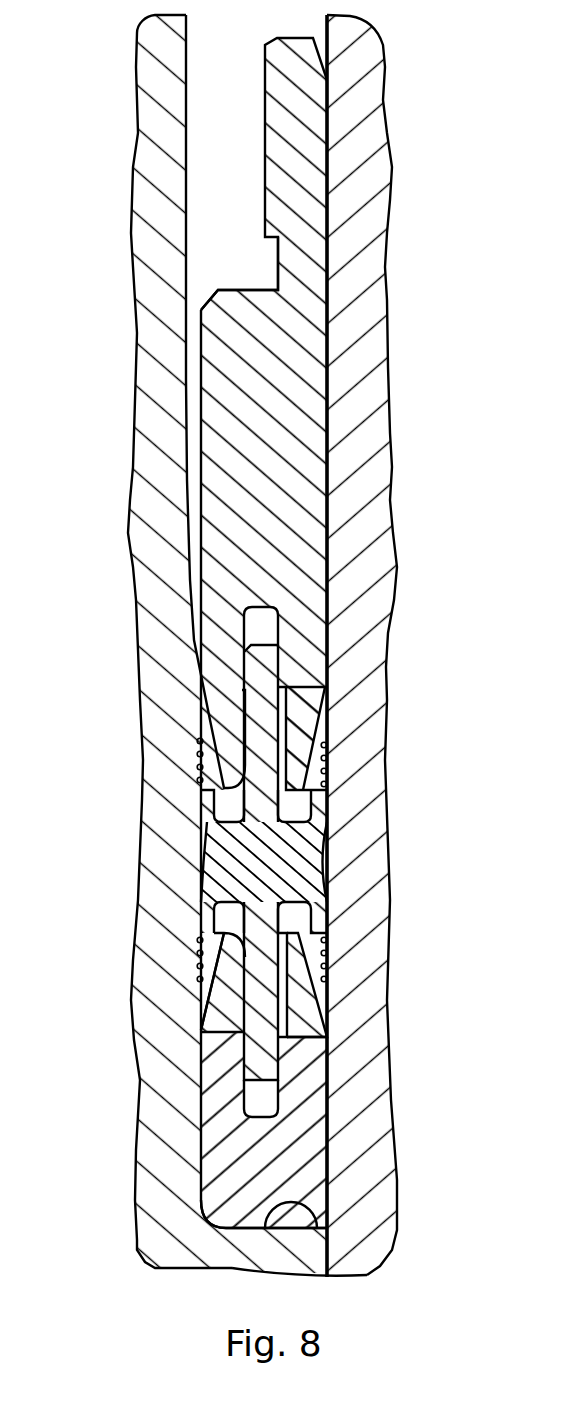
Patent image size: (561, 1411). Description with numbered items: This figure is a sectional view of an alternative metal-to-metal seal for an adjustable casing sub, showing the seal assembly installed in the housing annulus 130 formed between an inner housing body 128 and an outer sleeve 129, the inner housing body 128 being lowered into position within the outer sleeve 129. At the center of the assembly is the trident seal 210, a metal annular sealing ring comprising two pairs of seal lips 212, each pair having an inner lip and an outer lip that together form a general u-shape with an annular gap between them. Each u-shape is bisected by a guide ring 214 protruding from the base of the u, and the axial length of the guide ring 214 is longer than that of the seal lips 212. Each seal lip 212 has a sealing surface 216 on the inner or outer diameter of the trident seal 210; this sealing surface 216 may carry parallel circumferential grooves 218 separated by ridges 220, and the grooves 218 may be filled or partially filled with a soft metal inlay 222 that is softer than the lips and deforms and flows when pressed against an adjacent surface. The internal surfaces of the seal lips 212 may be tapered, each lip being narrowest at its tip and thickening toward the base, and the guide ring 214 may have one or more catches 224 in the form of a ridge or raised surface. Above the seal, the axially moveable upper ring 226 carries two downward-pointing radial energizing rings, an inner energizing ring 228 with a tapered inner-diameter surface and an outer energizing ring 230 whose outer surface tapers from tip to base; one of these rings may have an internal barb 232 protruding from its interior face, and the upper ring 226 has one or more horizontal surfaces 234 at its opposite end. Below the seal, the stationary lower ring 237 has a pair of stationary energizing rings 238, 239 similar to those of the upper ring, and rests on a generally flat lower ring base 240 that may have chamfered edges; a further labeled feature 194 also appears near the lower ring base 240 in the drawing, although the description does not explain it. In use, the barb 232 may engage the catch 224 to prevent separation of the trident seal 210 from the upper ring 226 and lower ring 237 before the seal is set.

The inner housing body 128 is at (176, 1215).
The outer sleeve 129 is at (370, 172).
The housing annulus 130 is at (194, 144).
The port 194 is at (302, 1199).
The trident seal 210 is at (300, 863).
The seal lips 212 is at (324, 776).
The guide ring 214 is at (260, 665).
The sealing surface 216 is at (326, 965).
The grooves 218 is at (203, 763).
The ridges 220 is at (200, 786).
The soft metal inlay 222 is at (213, 933).
The catch 224 is at (233, 1043).
The upper ring 226 is at (252, 350).
The inner energizing ring 228 is at (215, 718).
The outer energizing ring 230 is at (300, 732).
The internal barb 232 is at (233, 975).
The horizontal surface 234 is at (253, 289).
The lower ring 237 is at (290, 1157).
The stationary energizing ring 238 is at (232, 997).
The stationary energizing ring 239 is at (297, 993).
The lower ring base 240 is at (243, 1230).